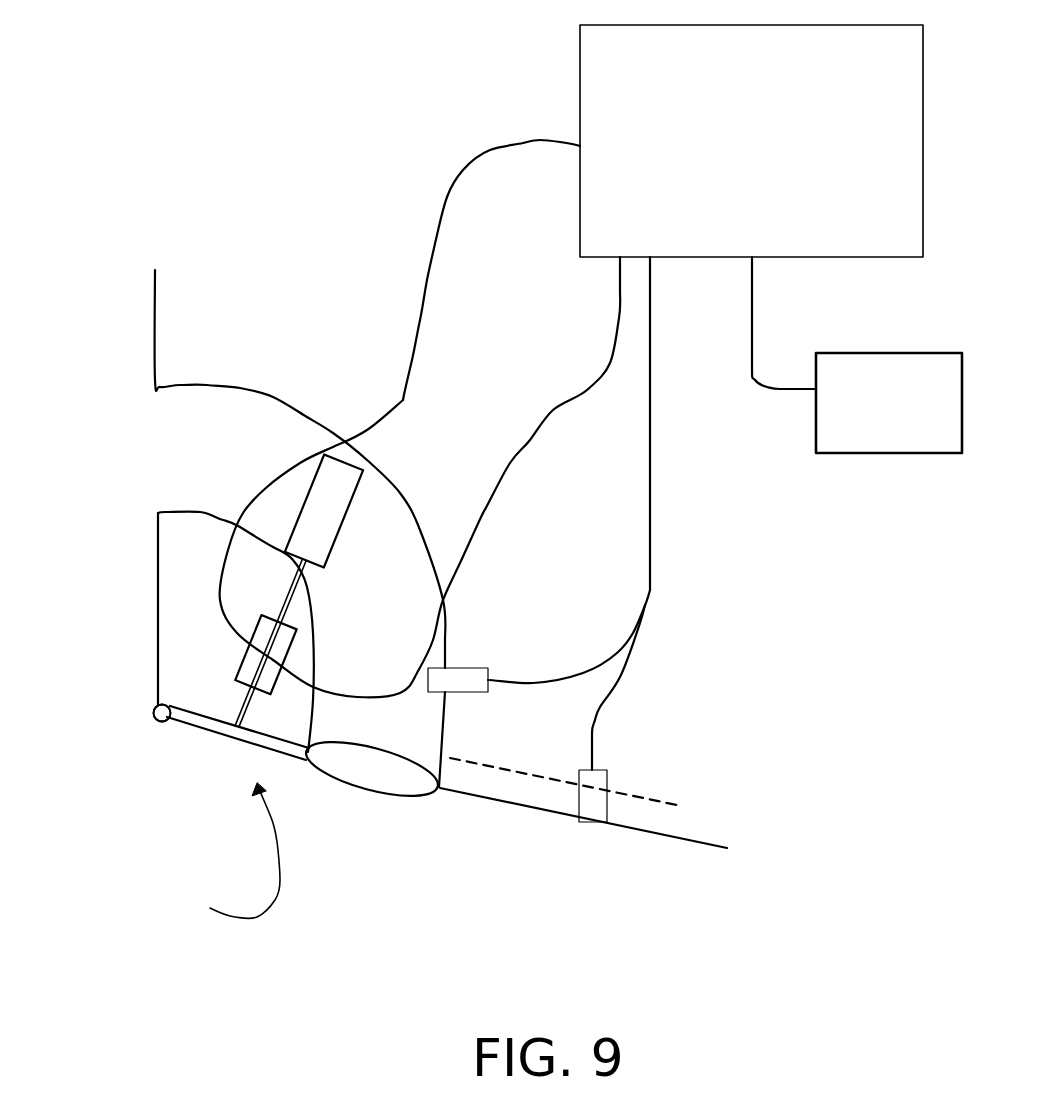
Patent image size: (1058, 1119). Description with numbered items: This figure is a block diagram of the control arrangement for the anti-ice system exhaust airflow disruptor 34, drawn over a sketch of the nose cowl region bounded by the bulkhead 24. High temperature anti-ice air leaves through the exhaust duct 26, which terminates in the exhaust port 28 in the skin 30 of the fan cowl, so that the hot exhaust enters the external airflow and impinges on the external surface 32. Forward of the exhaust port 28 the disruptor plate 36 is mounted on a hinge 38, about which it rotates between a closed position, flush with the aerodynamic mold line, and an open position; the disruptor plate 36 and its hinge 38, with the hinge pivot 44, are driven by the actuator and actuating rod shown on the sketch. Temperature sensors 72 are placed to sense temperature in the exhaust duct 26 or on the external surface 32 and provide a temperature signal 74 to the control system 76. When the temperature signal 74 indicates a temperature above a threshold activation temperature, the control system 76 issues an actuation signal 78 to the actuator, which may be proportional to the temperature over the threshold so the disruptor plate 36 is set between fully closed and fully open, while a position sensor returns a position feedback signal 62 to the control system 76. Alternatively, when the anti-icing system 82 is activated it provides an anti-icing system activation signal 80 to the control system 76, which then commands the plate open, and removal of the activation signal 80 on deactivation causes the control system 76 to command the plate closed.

The bulkhead 24 is at (156, 622).
The exhaust duct 26 is at (365, 537).
The exhaust port 28 is at (383, 778).
The skin 30 is at (523, 792).
The external surface 32 is at (630, 829).
The anti-ice system exhaust airflow disruptor 34 is at (226, 854).
The disruptor plate 36 is at (230, 743).
The hinge 38 is at (153, 720).
The hinge 44 is at (168, 723).
The position feedback signal 62 is at (543, 417).
The temperature sensors 72 is at (473, 668).
The temperature signal 74 is at (652, 405).
The control system 76 is at (848, 257).
The actuation signal 78 is at (430, 247).
The anti-icing system activation signal 80 is at (753, 337).
The anti-icing system 82 is at (868, 453).